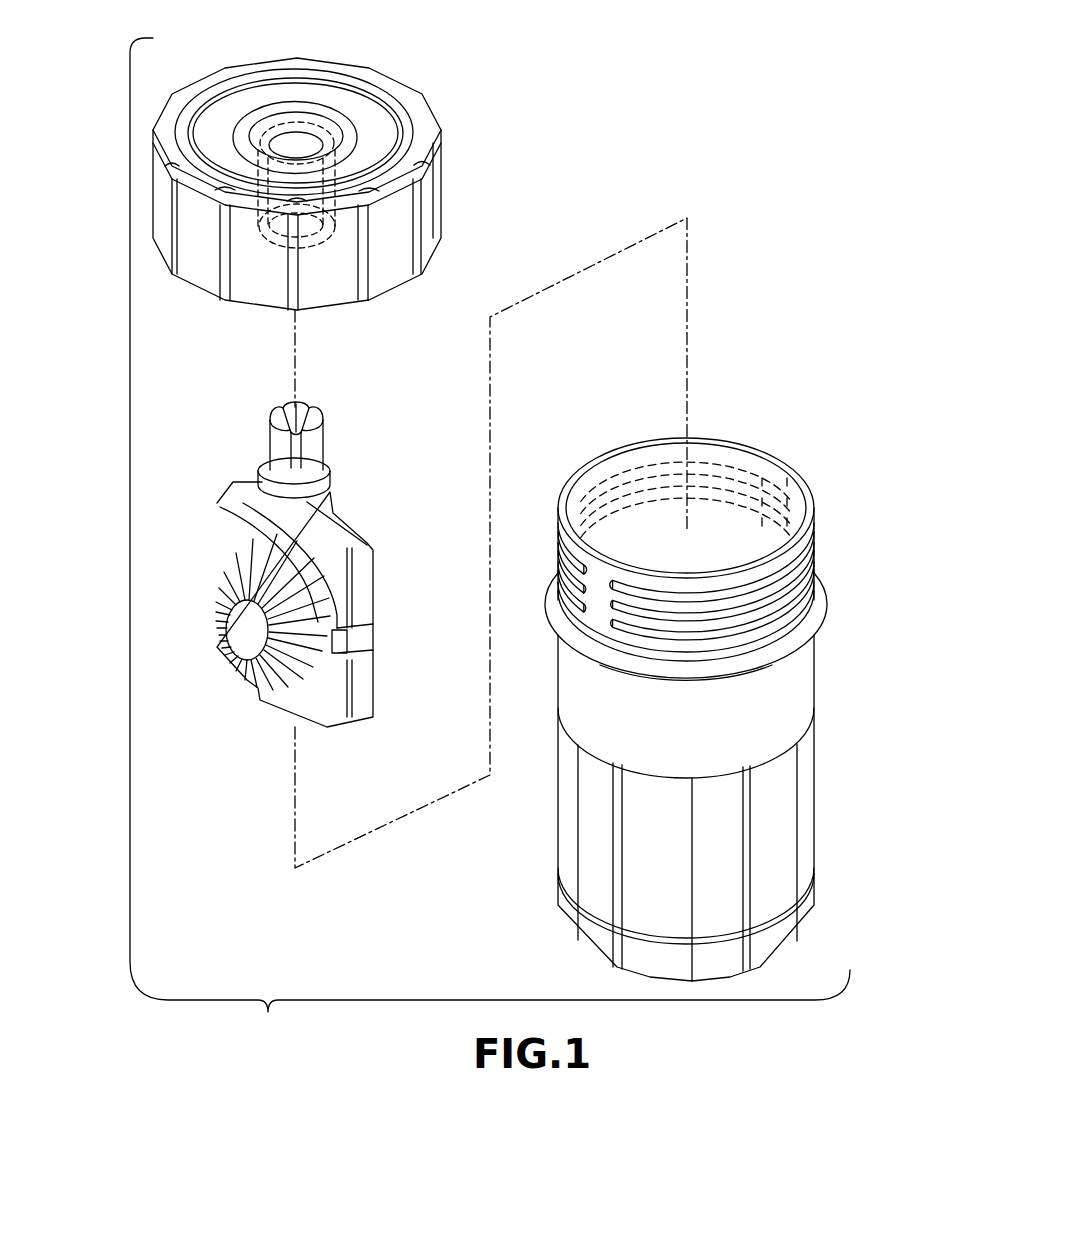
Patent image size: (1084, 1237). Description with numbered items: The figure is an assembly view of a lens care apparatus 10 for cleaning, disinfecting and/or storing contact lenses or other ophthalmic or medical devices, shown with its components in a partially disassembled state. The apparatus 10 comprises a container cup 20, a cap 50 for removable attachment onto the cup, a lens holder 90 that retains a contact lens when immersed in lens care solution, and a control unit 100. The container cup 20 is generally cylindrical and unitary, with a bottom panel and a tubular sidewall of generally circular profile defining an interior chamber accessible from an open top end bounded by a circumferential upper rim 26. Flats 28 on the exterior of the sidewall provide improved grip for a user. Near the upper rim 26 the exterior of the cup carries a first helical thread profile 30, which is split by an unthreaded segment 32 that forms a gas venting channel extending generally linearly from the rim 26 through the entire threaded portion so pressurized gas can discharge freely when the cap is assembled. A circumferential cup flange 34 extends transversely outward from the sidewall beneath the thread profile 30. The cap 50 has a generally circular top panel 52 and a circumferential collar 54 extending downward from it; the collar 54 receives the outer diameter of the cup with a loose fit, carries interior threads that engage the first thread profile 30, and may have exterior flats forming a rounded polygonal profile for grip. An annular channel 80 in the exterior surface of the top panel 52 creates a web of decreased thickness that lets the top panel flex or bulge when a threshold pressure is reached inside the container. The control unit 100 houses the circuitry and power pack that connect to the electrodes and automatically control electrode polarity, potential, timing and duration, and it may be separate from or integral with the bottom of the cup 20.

The lens care apparatus 10 is at (490, 545).
The container cup 20 is at (785, 691).
The upper rim 26 is at (800, 497).
The flats 28 is at (780, 835).
The first helical thread profile 30 is at (812, 580).
The unthreaded segment 32 is at (600, 620).
The cup flange 34 is at (702, 680).
The cap 50 is at (448, 190).
The top panel 52 is at (275, 105).
The collar 54 is at (262, 290).
The annular channel 80 is at (350, 100).
The lens holder 90 is at (330, 533).
The control unit 100 is at (785, 931).